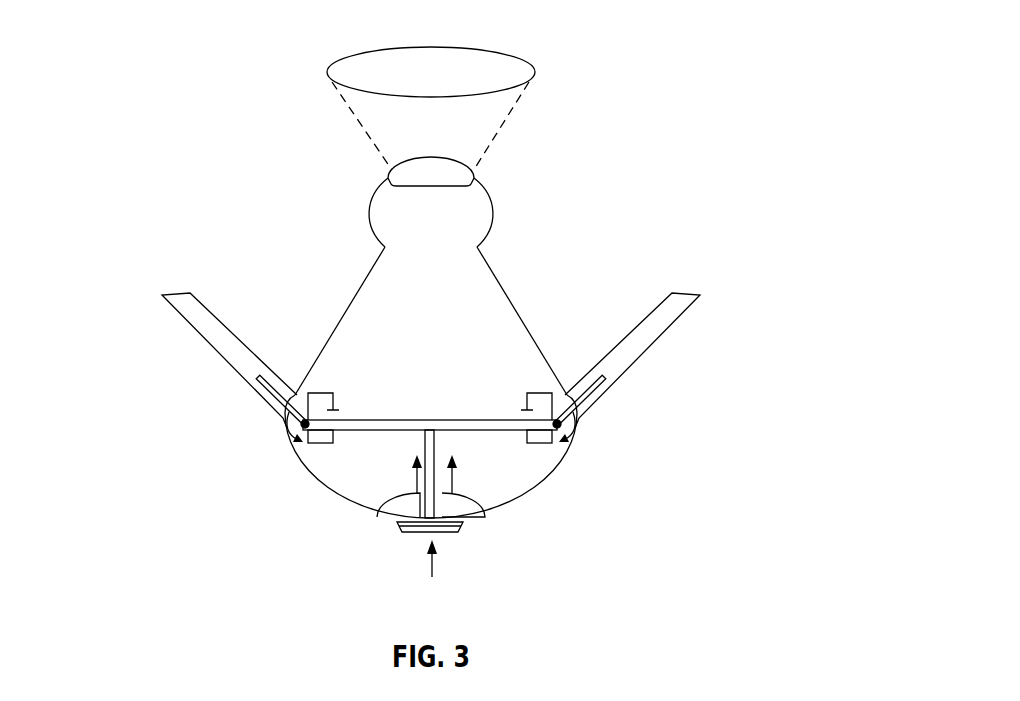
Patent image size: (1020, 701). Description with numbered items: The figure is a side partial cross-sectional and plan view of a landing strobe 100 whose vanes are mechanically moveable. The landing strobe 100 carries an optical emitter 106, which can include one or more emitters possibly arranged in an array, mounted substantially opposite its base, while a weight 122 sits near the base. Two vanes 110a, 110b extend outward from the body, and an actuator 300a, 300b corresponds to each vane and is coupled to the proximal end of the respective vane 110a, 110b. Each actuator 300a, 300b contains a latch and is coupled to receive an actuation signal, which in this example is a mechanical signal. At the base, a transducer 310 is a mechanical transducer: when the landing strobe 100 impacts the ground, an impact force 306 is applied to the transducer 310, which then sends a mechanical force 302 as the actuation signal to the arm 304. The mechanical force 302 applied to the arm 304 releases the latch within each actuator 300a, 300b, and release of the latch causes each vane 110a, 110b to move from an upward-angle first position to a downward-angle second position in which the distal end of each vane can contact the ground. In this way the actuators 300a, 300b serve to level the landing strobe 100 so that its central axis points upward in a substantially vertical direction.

The landing strobe 100 is at (638, 40).
The optical emitter 106 is at (393, 175).
The vane 110a is at (232, 368).
The vane 110b is at (643, 352).
The actuator 300a is at (348, 396).
The actuator 300b is at (514, 396).
The mechanical force 302 is at (453, 479).
The arm 304 is at (423, 421).
The impact force 306 is at (427, 557).
The transducer 310 is at (448, 533).
The weight 122 is at (398, 503).